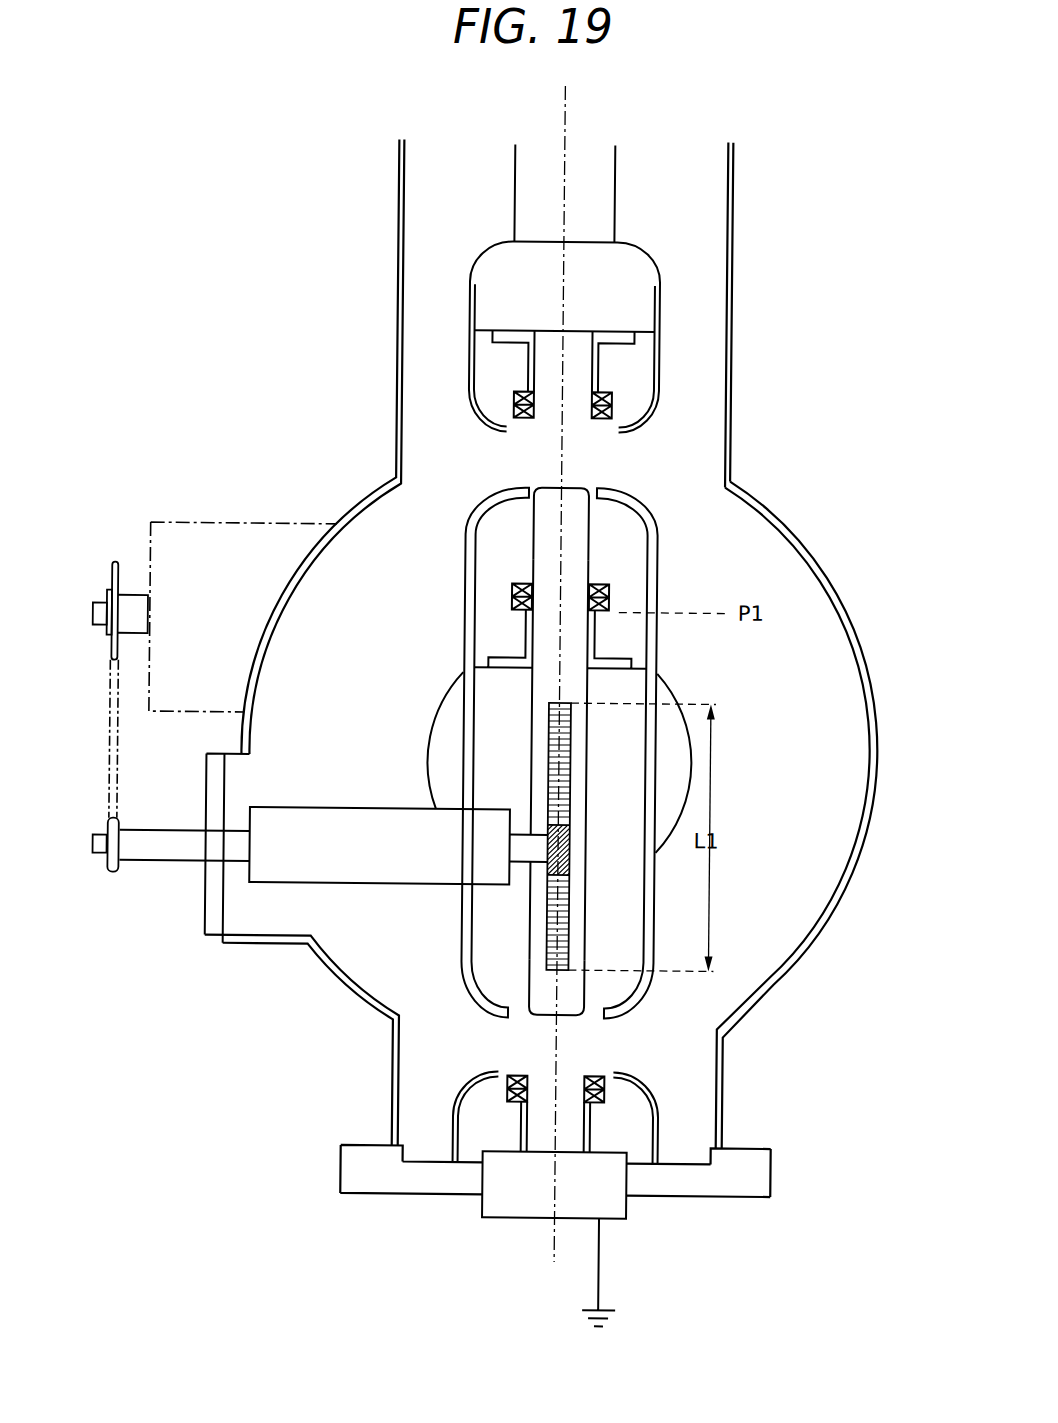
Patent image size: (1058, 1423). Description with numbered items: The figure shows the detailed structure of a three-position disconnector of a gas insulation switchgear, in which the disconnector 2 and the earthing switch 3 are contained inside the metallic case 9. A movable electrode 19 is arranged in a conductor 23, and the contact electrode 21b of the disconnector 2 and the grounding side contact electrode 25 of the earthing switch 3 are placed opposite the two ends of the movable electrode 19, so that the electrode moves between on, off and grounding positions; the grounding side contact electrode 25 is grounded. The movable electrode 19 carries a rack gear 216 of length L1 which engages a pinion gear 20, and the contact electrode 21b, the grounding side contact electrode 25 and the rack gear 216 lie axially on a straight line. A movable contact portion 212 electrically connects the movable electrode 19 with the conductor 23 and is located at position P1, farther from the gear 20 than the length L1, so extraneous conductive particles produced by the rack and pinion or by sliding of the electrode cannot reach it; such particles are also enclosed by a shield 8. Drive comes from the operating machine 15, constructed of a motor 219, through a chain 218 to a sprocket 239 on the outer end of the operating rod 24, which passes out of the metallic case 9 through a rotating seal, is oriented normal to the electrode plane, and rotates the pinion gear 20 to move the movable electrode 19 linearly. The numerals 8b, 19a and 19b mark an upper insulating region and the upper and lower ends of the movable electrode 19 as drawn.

The disconnector 2 is at (501, 450).
The earthing switch 3 is at (507, 1045).
The shield 8 is at (464, 603).
The upper insulating portion 8b is at (667, 373).
The metallic case 9 is at (728, 448).
The operating machine 15 is at (235, 525).
The movable electrode 19 is at (576, 570).
The upper rod portion 19a is at (542, 550).
The lower rod portion 19b is at (571, 1018).
The pinion gear 20 is at (568, 845).
The contact electrode 21b is at (595, 365).
The conductor 23 is at (428, 760).
The operating rod 24 is at (180, 864).
The grounding side contact electrode 25 is at (606, 1093).
The movable contact portion 212 is at (606, 597).
The rack gear 216 is at (548, 747).
The chain 218 is at (112, 716).
The motor 219 is at (107, 590).
The sprocket 239 is at (113, 878).